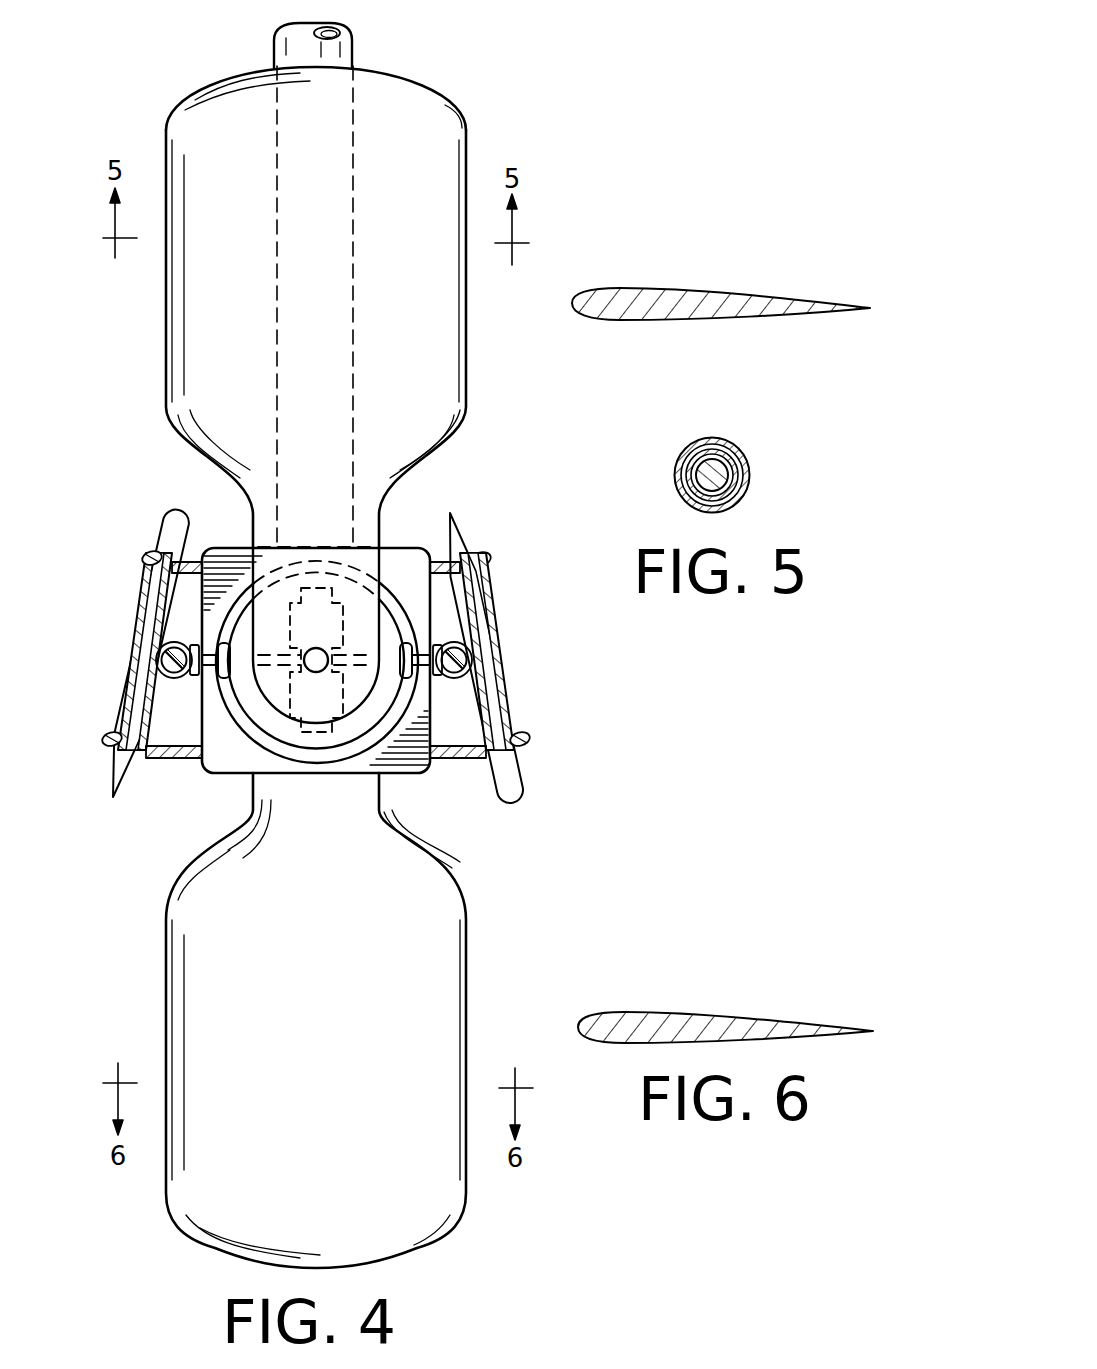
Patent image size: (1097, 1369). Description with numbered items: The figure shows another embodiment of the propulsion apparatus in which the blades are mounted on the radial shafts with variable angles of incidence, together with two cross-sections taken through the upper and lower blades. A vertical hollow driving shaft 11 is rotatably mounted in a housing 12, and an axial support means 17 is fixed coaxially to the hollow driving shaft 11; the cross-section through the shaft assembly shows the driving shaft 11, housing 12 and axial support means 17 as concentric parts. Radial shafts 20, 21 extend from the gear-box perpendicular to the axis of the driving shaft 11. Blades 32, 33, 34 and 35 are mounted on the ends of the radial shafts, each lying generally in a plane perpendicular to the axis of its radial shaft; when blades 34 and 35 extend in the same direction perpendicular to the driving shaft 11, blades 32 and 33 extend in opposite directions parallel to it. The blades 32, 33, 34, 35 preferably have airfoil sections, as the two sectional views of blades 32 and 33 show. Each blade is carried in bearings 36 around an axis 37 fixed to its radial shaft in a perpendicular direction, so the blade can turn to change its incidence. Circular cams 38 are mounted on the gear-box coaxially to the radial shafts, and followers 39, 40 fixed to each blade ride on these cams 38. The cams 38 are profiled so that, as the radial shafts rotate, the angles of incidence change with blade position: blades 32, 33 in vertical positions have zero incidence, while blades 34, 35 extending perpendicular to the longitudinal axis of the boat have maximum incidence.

In FIG. 5, the hollow driving shaft 11 is at (722, 450).
In FIG. 4, the housing 12 is at (337, 62).
In FIG. 5, the housing 12 is at (752, 470).
In FIG. 5, the axial support means 17 is at (724, 495).
In FIG. 4, the radial shaft 20 is at (194, 678).
In FIG. 4, the radial shaft 21 is at (440, 678).
In FIG. 4, the blade 32 is at (462, 352).
In FIG. 5, the blade 32 is at (652, 300).
In FIG. 4, the blade 33 is at (452, 980).
In FIG. 6, the blade 33 is at (641, 1025).
In FIG. 4, the blade 34 is at (163, 535).
In FIG. 4, the blade 35 is at (462, 535).
In FIG. 4, the bearings 36 is at (160, 650).
In FIG. 4, the axis 37 is at (160, 663).
In FIG. 4, the circular cam 38 is at (457, 762).
In FIG. 4, the follower 39 is at (142, 558).
In FIG. 4, the follower 40 is at (102, 741).